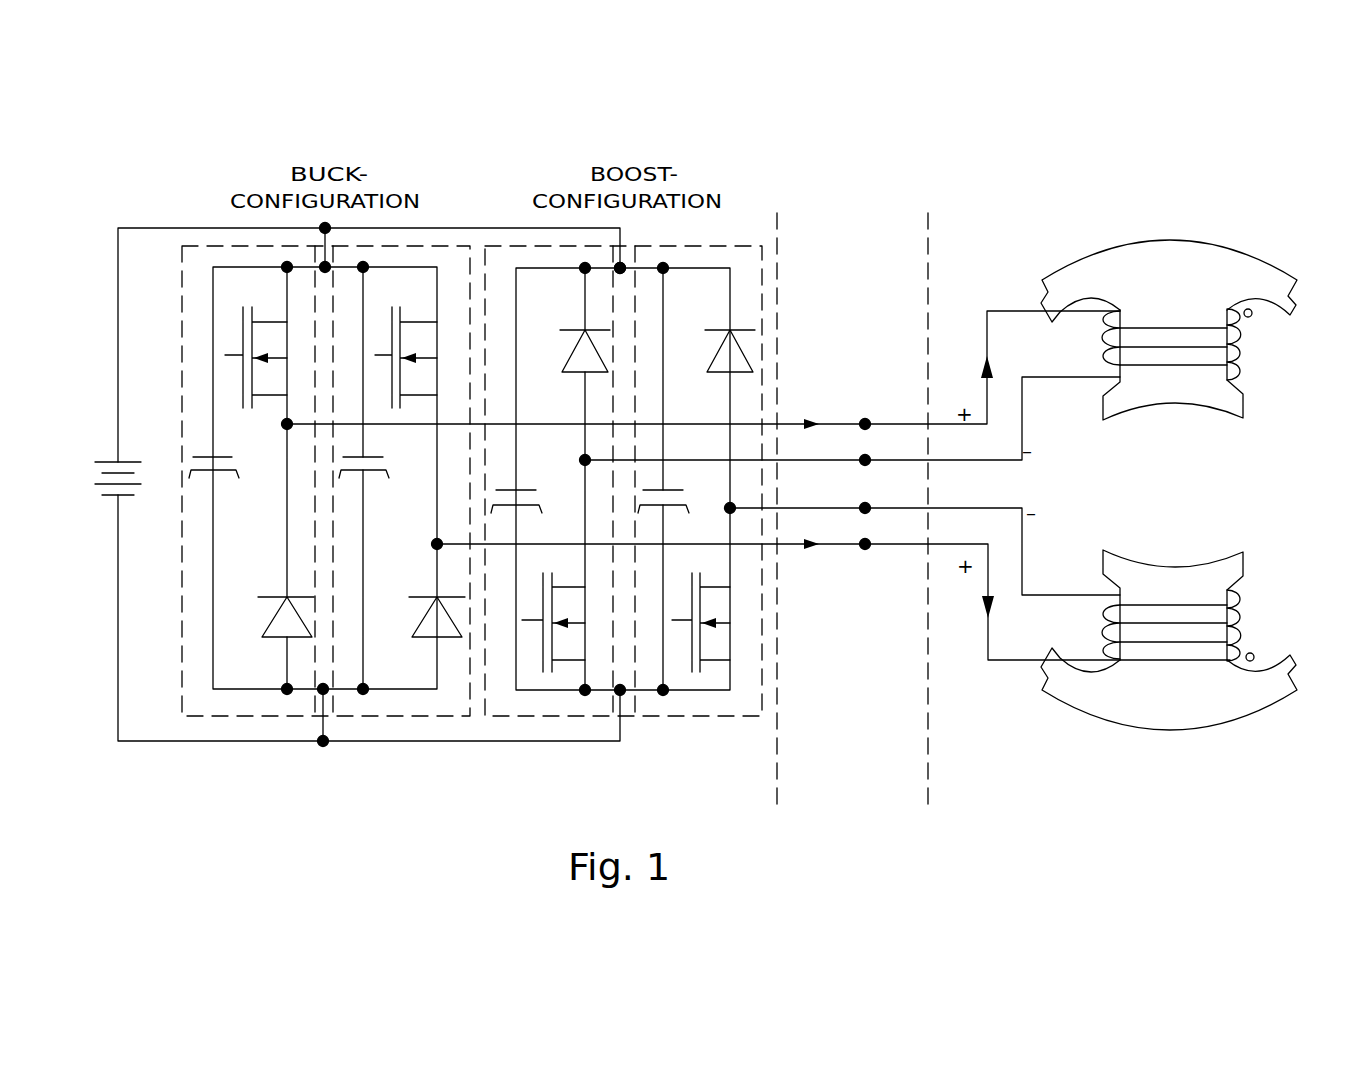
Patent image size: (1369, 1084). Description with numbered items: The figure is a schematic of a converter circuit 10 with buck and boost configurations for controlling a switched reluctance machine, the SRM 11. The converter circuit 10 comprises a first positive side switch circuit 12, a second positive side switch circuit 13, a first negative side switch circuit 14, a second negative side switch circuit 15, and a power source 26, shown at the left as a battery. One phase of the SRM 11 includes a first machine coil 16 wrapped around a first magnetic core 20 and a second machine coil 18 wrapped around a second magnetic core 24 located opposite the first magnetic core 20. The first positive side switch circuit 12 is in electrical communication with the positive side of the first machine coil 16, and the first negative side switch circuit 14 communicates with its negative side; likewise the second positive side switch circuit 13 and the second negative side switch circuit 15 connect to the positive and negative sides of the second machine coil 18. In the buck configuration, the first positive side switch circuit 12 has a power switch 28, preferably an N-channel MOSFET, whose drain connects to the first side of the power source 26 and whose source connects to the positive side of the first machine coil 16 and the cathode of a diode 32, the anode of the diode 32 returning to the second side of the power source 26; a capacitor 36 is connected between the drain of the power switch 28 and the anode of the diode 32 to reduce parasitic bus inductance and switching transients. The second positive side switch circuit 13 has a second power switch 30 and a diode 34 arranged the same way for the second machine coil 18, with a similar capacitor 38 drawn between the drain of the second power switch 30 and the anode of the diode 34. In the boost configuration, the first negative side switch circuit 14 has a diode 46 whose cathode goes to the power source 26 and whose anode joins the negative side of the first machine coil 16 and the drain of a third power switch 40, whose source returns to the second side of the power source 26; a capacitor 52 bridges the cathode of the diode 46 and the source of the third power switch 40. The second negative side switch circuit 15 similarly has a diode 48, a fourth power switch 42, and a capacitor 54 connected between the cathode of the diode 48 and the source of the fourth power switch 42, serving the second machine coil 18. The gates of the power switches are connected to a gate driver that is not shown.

The converter circuit 10 is at (776, 192).
The SRM 11 is at (1205, 449).
The first positive side switch circuit 12 is at (183, 246).
The second positive side switch circuit 13 is at (441, 245).
The first negative side switch circuit 14 is at (512, 246).
The second negative side switch circuit 15 is at (717, 247).
The first machine coil 16 is at (1243, 352).
The second machine coil 18 is at (1243, 617).
The first magnetic core 20 is at (1237, 403).
The second magnetic core 24 is at (1233, 558).
The power source 26 is at (108, 448).
The power switch 28 is at (237, 318).
The second power switch 30 is at (387, 318).
The diode 32 is at (262, 620).
The diode 34 is at (422, 637).
The capacitor 36 is at (208, 470).
The second capacitor 38 is at (358, 470).
The third power switch 40 is at (542, 657).
The fourth power switch 42 is at (692, 655).
The diode 46 is at (570, 360).
The diode 48 is at (745, 347).
The capacitor 52 is at (500, 506).
The capacitor 54 is at (653, 506).